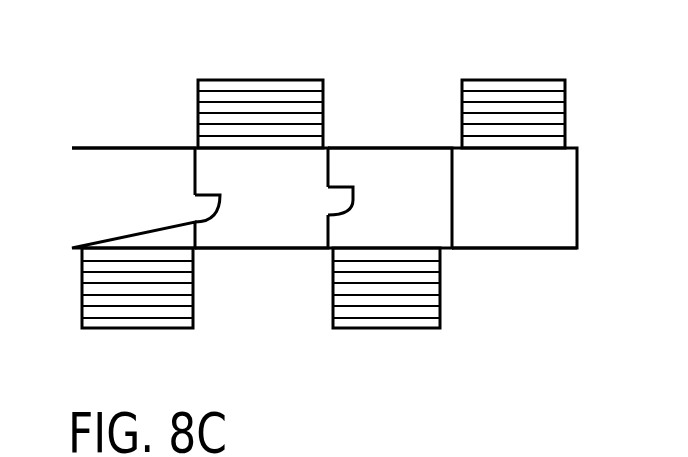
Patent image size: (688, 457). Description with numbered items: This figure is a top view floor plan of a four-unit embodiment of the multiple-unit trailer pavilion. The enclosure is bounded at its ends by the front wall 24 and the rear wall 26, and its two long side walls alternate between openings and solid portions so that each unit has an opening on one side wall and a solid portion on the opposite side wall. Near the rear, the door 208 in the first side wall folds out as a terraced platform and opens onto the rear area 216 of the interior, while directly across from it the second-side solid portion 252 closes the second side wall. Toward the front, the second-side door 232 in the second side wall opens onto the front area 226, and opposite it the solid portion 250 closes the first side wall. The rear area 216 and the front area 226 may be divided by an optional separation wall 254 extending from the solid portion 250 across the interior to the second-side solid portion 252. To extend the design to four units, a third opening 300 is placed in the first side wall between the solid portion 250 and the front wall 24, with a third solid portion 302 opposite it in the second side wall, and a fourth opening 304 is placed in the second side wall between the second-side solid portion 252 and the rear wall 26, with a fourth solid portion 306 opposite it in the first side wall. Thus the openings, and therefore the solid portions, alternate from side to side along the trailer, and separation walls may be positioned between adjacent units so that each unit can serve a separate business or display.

The front wall 24 is at (72, 212).
The rear wall 26 is at (578, 210).
The door 208 is at (382, 298).
The rear area 216 is at (433, 187).
The front area 226 is at (279, 168).
The second-side door 232 is at (246, 90).
The solid portion 250 is at (265, 250).
The second-side solid portion 252 is at (372, 148).
The separation wall 254 is at (331, 171).
The third opening 300 is at (160, 232).
The third solid portion 302 is at (131, 148).
The fourth opening 304 is at (540, 168).
The fourth solid portion 306 is at (520, 250).